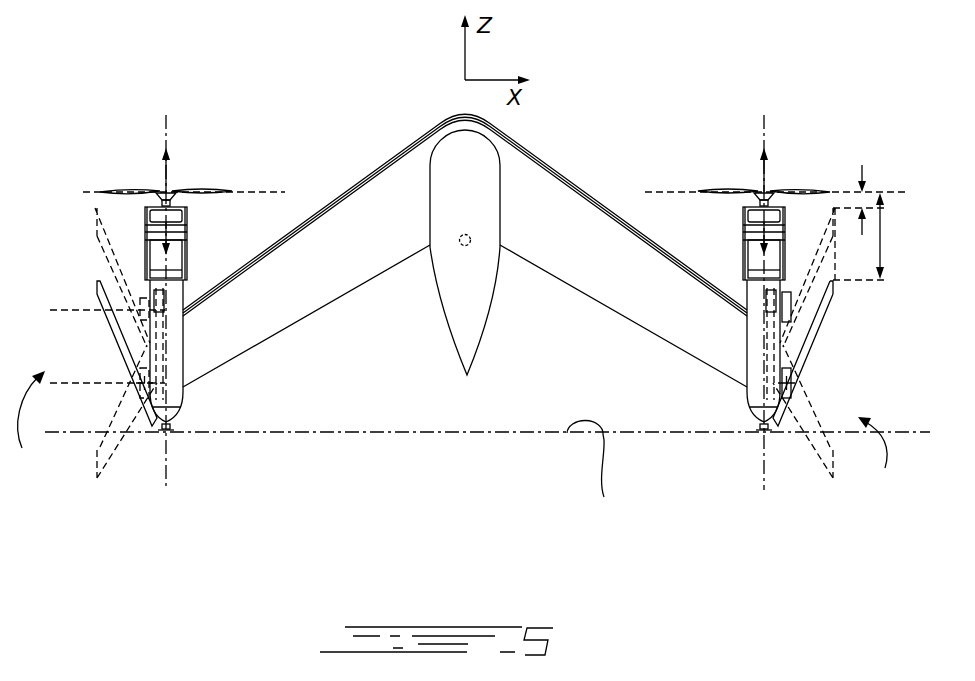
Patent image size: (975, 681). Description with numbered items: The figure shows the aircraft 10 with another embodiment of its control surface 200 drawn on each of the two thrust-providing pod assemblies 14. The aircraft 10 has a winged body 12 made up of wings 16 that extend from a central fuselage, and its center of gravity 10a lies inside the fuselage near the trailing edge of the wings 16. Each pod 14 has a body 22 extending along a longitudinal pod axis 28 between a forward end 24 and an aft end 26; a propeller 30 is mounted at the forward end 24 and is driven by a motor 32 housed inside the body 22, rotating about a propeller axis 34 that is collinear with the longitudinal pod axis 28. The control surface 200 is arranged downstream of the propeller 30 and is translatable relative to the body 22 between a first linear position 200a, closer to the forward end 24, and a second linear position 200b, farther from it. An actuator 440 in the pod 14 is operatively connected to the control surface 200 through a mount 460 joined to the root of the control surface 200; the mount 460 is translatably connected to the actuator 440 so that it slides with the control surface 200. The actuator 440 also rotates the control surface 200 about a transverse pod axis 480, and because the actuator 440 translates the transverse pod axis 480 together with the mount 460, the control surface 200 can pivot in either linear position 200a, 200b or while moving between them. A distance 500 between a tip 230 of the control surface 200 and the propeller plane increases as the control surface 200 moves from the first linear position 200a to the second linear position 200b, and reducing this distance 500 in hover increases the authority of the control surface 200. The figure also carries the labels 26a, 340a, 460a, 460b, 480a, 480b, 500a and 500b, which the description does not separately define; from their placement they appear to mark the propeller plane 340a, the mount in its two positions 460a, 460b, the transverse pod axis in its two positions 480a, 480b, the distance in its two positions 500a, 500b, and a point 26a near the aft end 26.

The aircraft 10 is at (486, 201).
The center of gravity 10a is at (470, 244).
The winged body 12 is at (452, 470).
The thrust-providing pod assembly 14 is at (452, 433).
The wing 16 is at (358, 220).
The body 22 is at (183, 312).
The forward end 24 is at (172, 200).
The aft end 26 is at (172, 430).
The ground contact point 26a is at (594, 473).
The longitudinal pod axis 28 is at (168, 480).
The propeller 30 is at (155, 194).
The motor 32 is at (178, 262).
The propeller axis 34 is at (768, 120).
The control surface 200 is at (456, 301).
The first linear position 200a is at (97, 233).
The second linear position 200b is at (123, 342).
The tip 230 is at (835, 293).
The reference plane 340a is at (896, 193).
The actuator 440 is at (150, 338).
The mount 460 is at (515, 265).
The first actuator 460a is at (177, 318).
The second actuator 460b is at (178, 402).
The transverse pod axis 480 is at (91, 340).
The first pivot axis 480a is at (50, 310).
The second pivot axis 480b is at (72, 383).
The distance 500 is at (892, 181).
The first distance 500a is at (860, 200).
The second distance 500b is at (880, 238).